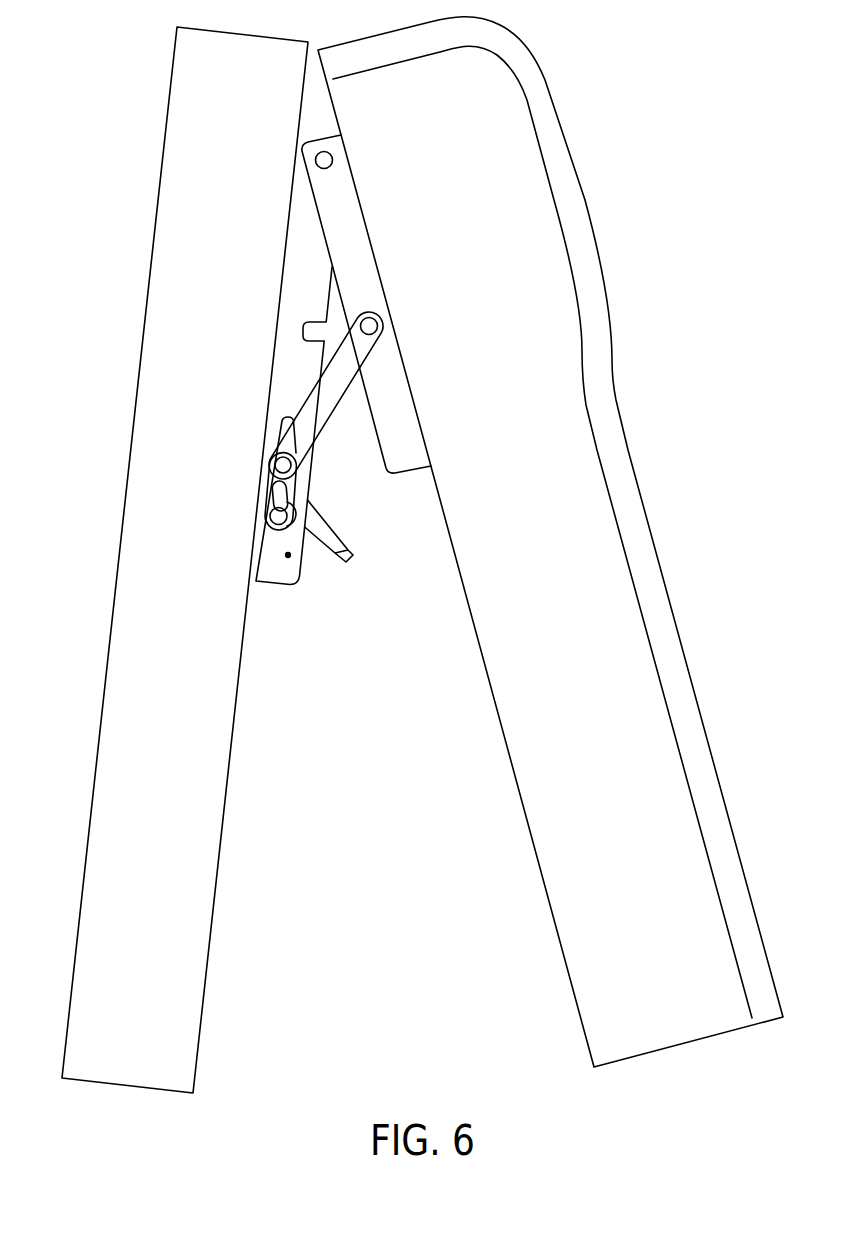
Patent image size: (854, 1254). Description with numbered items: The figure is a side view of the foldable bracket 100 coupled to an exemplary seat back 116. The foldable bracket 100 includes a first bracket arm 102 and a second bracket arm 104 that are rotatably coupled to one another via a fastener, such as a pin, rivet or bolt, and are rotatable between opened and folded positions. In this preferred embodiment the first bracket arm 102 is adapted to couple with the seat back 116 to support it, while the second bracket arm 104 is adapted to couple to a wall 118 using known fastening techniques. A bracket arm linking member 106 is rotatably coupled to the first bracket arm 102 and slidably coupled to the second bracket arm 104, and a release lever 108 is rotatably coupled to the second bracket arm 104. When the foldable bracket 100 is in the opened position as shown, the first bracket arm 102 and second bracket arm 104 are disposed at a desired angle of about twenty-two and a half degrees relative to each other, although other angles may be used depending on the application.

The foldable bracket 100 is at (327, 411).
The first bracket arm 102 is at (358, 238).
The second bracket arm 104 is at (300, 263).
The bracket arm linking member 106 is at (322, 417).
The release lever 108 is at (348, 548).
The seat back 116 is at (672, 603).
The wall 118 is at (218, 797).